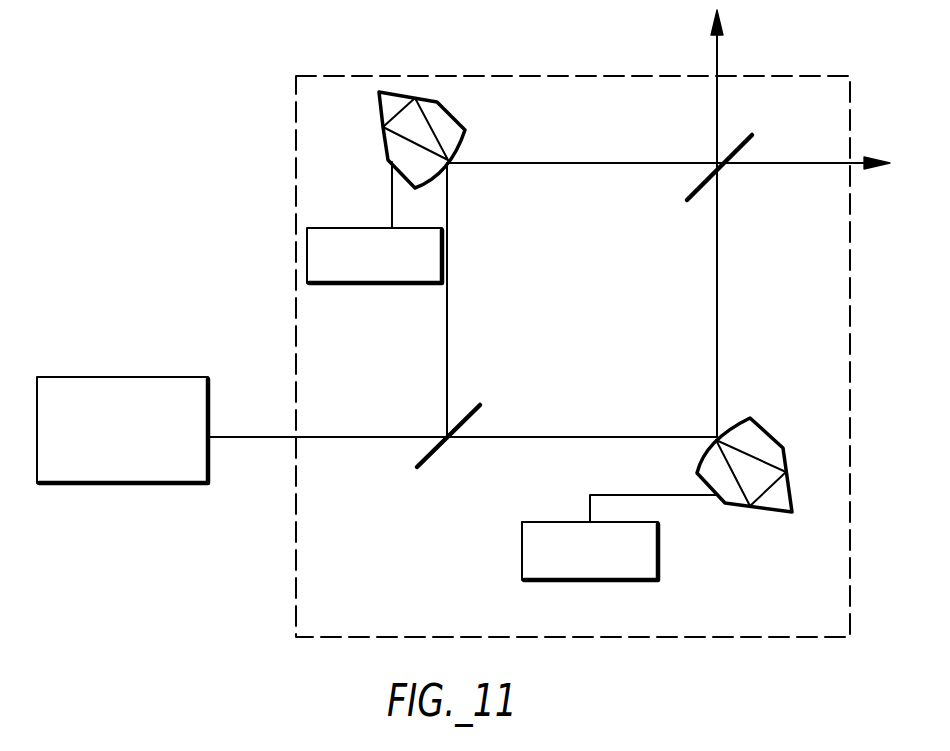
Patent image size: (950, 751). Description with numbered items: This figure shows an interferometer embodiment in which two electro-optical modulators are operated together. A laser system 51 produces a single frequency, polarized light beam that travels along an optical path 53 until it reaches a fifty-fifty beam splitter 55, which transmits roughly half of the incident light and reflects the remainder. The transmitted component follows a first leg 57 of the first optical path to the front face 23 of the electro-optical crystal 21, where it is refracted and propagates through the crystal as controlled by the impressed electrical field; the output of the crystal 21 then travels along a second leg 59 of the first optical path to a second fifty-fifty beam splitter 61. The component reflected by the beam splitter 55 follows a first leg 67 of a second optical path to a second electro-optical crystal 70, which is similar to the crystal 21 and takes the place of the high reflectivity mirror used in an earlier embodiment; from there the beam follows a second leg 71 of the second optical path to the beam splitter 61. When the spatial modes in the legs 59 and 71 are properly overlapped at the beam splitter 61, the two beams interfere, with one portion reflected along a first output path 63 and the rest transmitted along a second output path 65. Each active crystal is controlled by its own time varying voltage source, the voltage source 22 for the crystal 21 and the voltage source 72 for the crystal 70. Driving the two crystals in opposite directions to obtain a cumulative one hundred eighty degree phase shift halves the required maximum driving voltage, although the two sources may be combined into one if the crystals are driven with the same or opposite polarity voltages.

The electro-optical crystal 21 is at (752, 428).
The voltage source 22 is at (602, 582).
The front face 23 is at (680, 450).
The laser system 51 is at (102, 485).
The optical path 53 is at (212, 438).
The 50/50 beam splitter 55 is at (465, 422).
The first leg of the first optical path 57 is at (548, 440).
The second leg of the first optical path 59 is at (720, 323).
The second 50/50 beam splitter 61 is at (707, 187).
The first output path 63 is at (763, 165).
The second output path 65 is at (721, 100).
The first leg of the second optical path 67 is at (450, 310).
The second electro-optical crystal 70 is at (437, 103).
The second leg of the second optical path 71 is at (570, 163).
The voltage source 72 is at (422, 285).